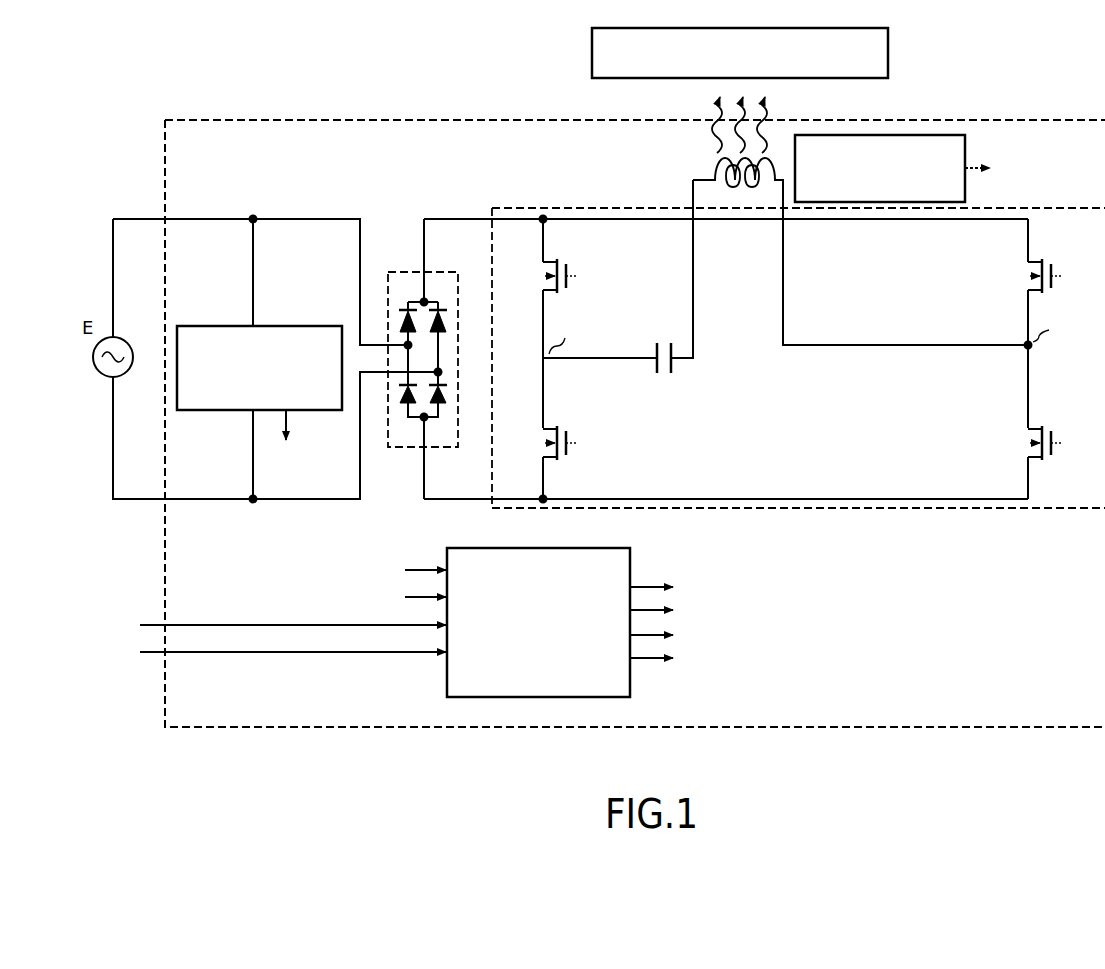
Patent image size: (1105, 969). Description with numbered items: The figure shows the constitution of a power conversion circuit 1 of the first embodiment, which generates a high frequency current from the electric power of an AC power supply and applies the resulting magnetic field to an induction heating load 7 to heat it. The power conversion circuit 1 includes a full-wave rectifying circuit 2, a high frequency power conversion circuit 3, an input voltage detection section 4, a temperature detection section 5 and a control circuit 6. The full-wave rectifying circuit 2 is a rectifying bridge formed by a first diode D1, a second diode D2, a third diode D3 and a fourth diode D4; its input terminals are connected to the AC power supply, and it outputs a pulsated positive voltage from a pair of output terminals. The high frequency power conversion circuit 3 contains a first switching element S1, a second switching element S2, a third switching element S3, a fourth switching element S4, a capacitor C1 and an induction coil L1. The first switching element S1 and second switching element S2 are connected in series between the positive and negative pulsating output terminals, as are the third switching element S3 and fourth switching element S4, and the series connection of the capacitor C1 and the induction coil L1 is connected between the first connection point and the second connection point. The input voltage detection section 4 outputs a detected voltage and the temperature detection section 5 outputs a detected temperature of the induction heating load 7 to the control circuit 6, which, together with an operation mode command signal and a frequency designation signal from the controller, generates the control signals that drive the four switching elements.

The power conversion circuit 1 is at (282, 118).
The full-wave rectifying circuit 2 is at (428, 359).
The high frequency power conversion circuit 3 is at (505, 208).
The input voltage detection section 4 is at (288, 326).
The temperature detection section 5 is at (968, 188).
The control circuit 6 is at (582, 548).
The induction heating load 7 is at (590, 48).
The first diode D1 is at (391, 322).
The second diode D2 is at (460, 322).
The third diode D3 is at (396, 406).
The fourth diode D4 is at (450, 406).
The first switching element S1 is at (540, 274).
The second switching element S2 is at (540, 441).
The third switching element S3 is at (1024, 272).
The fourth switching element S4 is at (1024, 439).
The capacitor C1 is at (659, 338).
The induction coil L1 is at (740, 194).